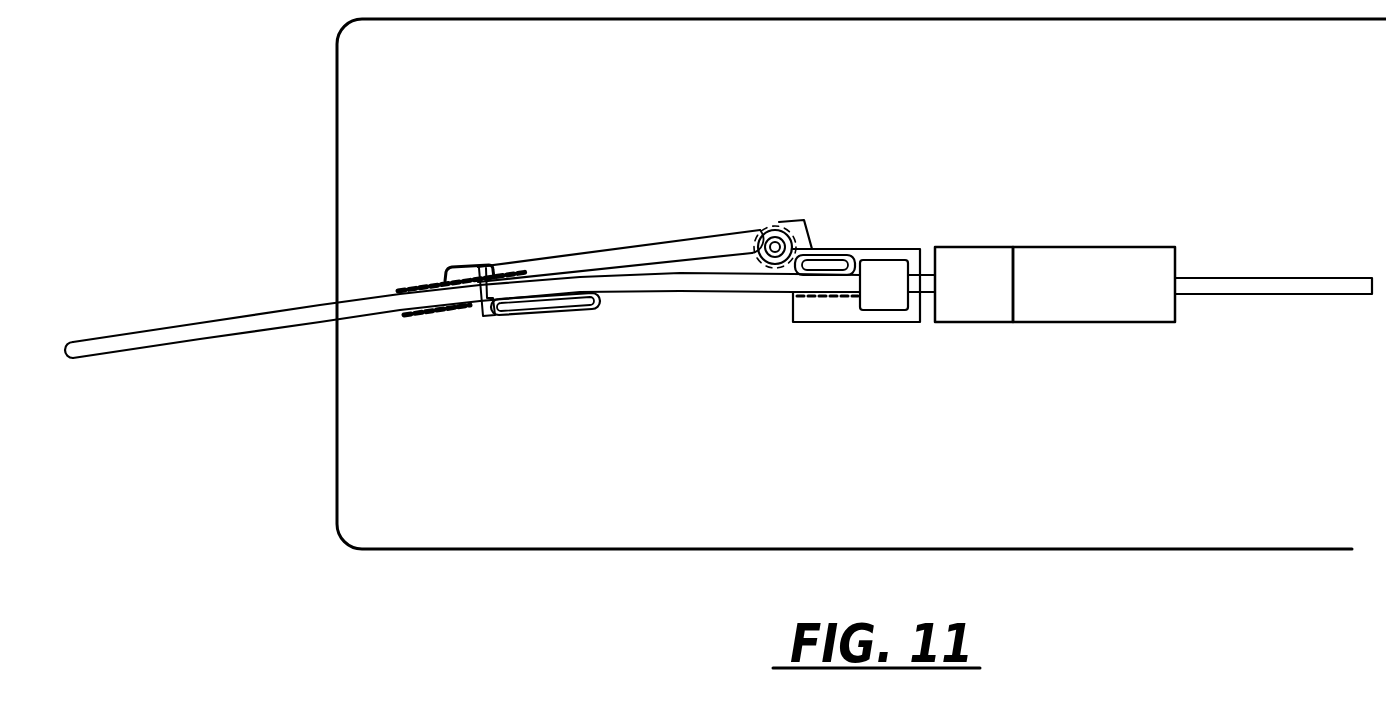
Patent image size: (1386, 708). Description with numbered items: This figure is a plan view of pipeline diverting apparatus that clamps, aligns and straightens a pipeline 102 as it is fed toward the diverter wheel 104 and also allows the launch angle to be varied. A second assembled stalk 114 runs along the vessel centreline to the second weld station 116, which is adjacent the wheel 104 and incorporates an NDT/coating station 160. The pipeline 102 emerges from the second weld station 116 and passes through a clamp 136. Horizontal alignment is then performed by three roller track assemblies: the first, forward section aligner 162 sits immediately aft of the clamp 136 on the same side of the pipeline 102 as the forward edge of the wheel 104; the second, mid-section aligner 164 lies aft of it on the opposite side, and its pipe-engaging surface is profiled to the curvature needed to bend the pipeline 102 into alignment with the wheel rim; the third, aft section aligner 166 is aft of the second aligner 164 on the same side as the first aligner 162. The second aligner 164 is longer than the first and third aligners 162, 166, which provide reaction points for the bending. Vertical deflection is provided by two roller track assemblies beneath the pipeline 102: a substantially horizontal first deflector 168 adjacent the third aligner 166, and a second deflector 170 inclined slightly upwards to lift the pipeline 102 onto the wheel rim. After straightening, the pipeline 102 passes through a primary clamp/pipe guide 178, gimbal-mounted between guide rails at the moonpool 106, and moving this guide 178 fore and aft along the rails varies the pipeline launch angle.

The pipeline 102 is at (128, 345).
The diverter wheel 104 is at (233, 348).
The moonpool 106 is at (573, 257).
The second assembled stalk 114 is at (1297, 278).
The second weld station 116 is at (1120, 307).
The clamp 136 is at (883, 311).
The NDT/coating station 160 is at (995, 307).
The first roller track assembly (forward section aligner) 162 is at (840, 255).
The second roller track assembly (mid-section aligner) 164 is at (558, 315).
The third roller track assembly (aft section aligner) 166 is at (463, 267).
The first roller track assembly (first deflector) 168 is at (515, 272).
The second roller track assembly (second deflector) 170 is at (422, 316).
The primary clamp/pipe guide 178 is at (788, 225).